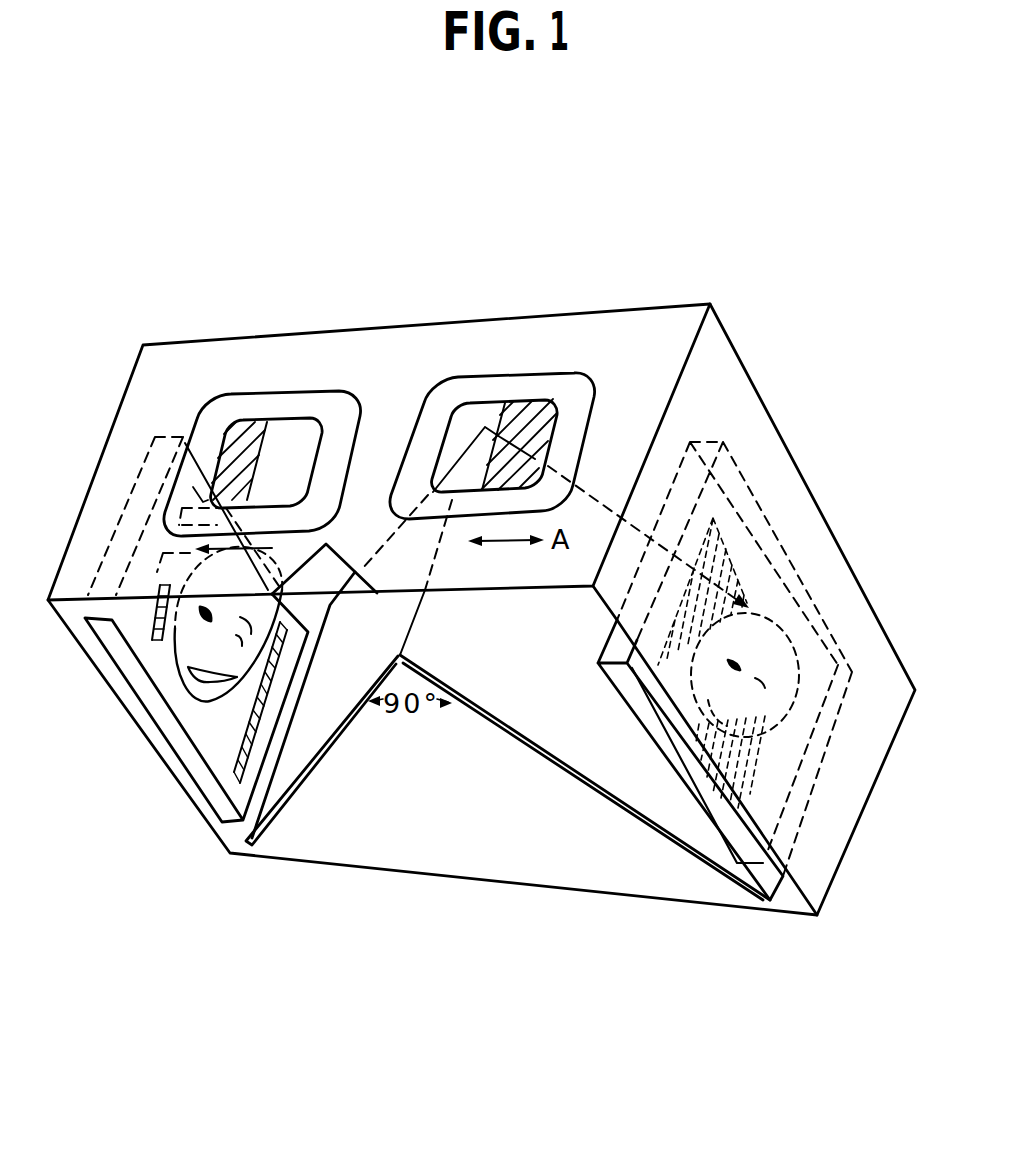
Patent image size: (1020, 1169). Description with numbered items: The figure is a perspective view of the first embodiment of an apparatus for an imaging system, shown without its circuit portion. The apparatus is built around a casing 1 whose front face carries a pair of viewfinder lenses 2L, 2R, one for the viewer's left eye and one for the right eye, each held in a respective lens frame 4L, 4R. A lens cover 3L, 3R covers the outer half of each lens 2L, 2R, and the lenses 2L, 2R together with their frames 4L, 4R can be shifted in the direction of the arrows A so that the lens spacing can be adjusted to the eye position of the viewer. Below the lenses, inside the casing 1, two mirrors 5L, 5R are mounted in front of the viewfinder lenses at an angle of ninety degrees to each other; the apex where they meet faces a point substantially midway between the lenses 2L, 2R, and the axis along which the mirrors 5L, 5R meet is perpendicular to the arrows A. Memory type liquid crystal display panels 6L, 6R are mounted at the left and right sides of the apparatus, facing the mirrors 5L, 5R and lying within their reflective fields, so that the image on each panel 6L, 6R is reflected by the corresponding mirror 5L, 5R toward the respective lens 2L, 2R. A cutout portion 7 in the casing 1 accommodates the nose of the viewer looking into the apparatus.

The casing 1 is at (373, 872).
The left viewfinder lens 2L is at (308, 425).
The right viewfinder lens 2R is at (480, 413).
The left lens cover 3L is at (240, 425).
The right lens cover 3R is at (552, 400).
The left lens frame 4L is at (215, 405).
The right lens frame 4R is at (448, 392).
The left mirror 5L is at (333, 710).
The right mirror 5R is at (500, 700).
The left memory type liquid crystal display panel 6L is at (230, 750).
The right memory type liquid crystal display panel 6R is at (718, 873).
The cutout portion 7 is at (358, 568).